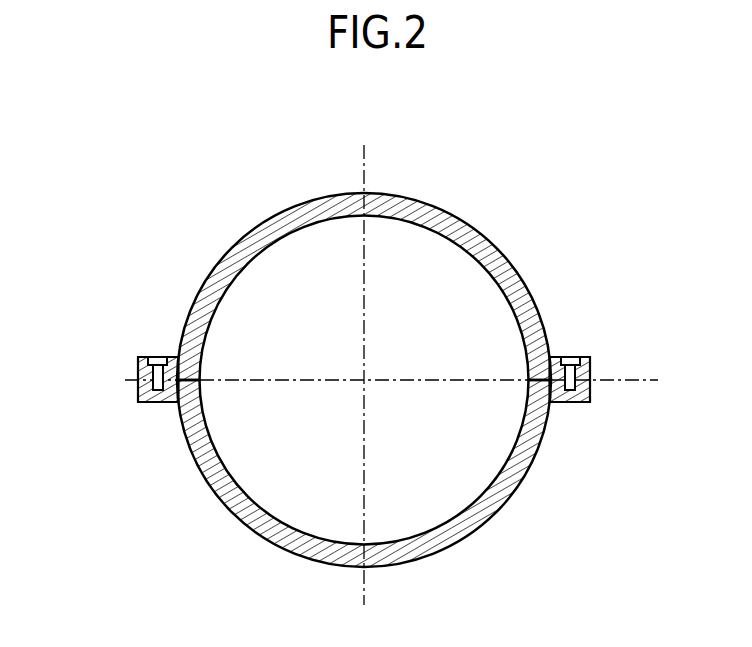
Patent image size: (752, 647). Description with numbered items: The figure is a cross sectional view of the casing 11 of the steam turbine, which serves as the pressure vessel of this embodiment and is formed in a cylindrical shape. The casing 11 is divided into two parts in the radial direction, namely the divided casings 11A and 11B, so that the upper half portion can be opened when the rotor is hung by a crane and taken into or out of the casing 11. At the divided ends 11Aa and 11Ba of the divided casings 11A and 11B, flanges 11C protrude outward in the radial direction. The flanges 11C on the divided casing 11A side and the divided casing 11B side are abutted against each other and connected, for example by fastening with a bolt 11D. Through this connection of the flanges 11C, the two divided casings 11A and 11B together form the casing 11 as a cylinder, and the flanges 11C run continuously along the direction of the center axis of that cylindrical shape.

The casing 11 is at (399, 134).
The divided casing 11A is at (349, 197).
The divided casing 11B is at (395, 553).
The divided end 11Aa is at (200, 366).
The divided end 11Ba is at (202, 392).
The flange 11C is at (138, 370).
The bolt 11D is at (155, 356).